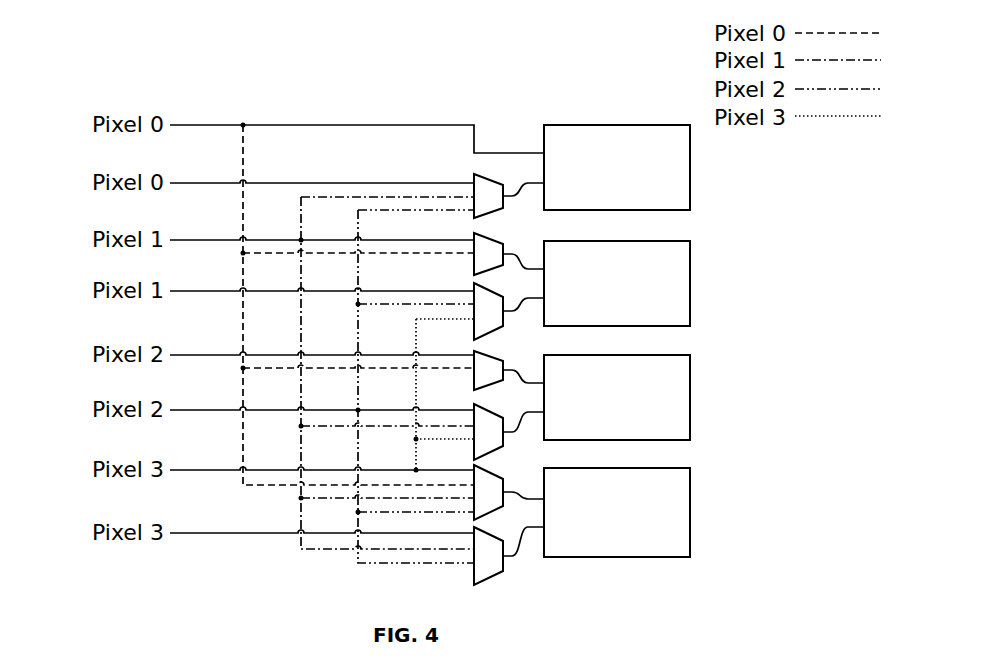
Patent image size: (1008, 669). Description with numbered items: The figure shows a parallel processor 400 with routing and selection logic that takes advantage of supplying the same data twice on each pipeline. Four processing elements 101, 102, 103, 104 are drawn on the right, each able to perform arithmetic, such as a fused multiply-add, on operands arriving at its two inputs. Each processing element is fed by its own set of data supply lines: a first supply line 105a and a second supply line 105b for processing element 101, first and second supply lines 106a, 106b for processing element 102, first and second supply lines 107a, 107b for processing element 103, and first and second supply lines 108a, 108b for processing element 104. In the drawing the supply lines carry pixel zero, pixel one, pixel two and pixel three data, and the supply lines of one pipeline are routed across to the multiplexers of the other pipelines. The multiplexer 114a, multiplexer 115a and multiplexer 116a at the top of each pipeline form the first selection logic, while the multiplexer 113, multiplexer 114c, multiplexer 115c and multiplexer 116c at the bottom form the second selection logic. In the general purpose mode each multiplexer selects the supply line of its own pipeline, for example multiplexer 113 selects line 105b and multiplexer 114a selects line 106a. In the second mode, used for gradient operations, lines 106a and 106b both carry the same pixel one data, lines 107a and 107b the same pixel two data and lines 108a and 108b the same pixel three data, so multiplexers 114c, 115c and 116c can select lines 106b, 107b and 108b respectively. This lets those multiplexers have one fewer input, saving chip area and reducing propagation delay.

The processor 400 is at (105, 45).
The first supply line 105a is at (386, 125).
The second supply line 105b is at (372, 183).
The first supply line 106a is at (236, 240).
The second supply line 106b is at (202, 292).
The first supply line 107a is at (200, 356).
The second supply line 107b is at (197, 411).
The first supply line 108a is at (205, 471).
The second supply line 108b is at (205, 534).
The multiplexer 113 is at (474, 178).
The multiplexer 114a is at (480, 237).
The multiplexer 114c is at (474, 290).
The multiplexer 115a is at (480, 354).
The multiplexer 115c is at (480, 409).
The multiplexer 116a is at (480, 470).
The multiplexer 116c is at (495, 575).
The processing element 101 is at (690, 188).
The processing element 102 is at (690, 246).
The processing element 103 is at (690, 358).
The processing element 104 is at (690, 473).